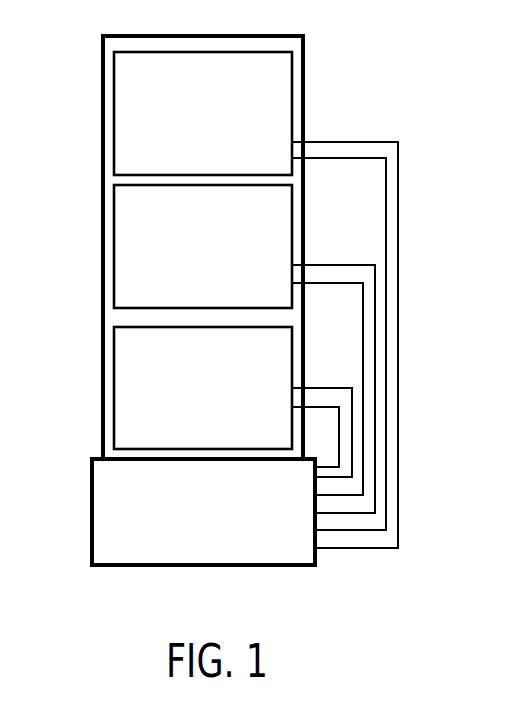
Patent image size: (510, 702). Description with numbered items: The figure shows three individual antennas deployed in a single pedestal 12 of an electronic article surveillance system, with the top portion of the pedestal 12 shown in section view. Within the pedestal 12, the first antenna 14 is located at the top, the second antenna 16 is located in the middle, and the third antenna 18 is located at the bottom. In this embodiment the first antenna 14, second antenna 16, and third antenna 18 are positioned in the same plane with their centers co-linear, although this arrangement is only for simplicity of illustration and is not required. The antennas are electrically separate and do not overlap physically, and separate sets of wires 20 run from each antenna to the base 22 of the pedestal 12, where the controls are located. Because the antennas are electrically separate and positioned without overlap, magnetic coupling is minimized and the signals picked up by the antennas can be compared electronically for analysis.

The pedestal 12 is at (305, 64).
The first antenna 14 is at (114, 87).
The second antenna 16 is at (114, 227).
The third antenna 18 is at (114, 367).
The sets of wires 20 is at (378, 142).
The base 22 is at (92, 490).